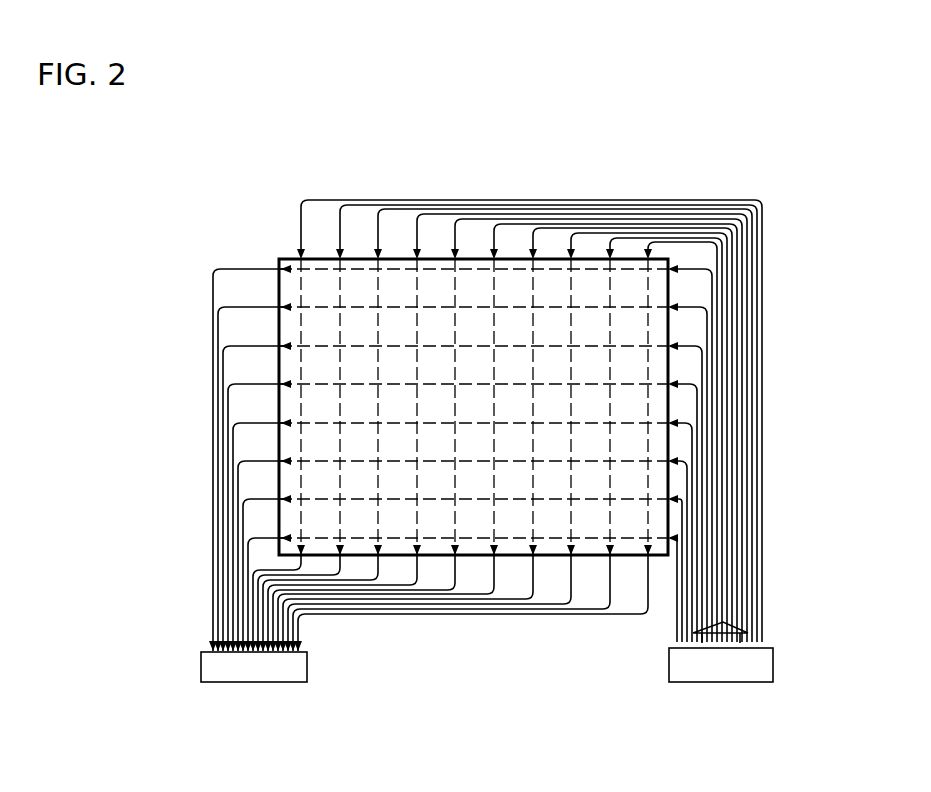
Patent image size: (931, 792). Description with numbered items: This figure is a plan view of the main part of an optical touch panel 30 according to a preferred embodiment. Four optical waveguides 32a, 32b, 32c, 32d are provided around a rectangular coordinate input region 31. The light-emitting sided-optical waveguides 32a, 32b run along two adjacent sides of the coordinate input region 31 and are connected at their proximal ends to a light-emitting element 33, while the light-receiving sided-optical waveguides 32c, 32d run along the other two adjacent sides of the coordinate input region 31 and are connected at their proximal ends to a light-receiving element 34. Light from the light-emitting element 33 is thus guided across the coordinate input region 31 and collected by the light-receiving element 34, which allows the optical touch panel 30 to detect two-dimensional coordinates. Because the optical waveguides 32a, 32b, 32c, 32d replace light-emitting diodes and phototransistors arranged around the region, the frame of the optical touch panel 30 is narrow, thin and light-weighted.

The optical touch panel 30 is at (490, 98).
The coordinate input region 31 is at (360, 328).
The light-emitting sided-optical waveguide 32a is at (735, 395).
The light-emitting sided-optical waveguide 32b is at (610, 222).
The light-receiving sided-optical waveguide 32c is at (220, 513).
The light-receiving sided-optical waveguide 32d is at (423, 602).
The light-emitting element 33 is at (703, 683).
The light-receiving element 34 is at (241, 683).